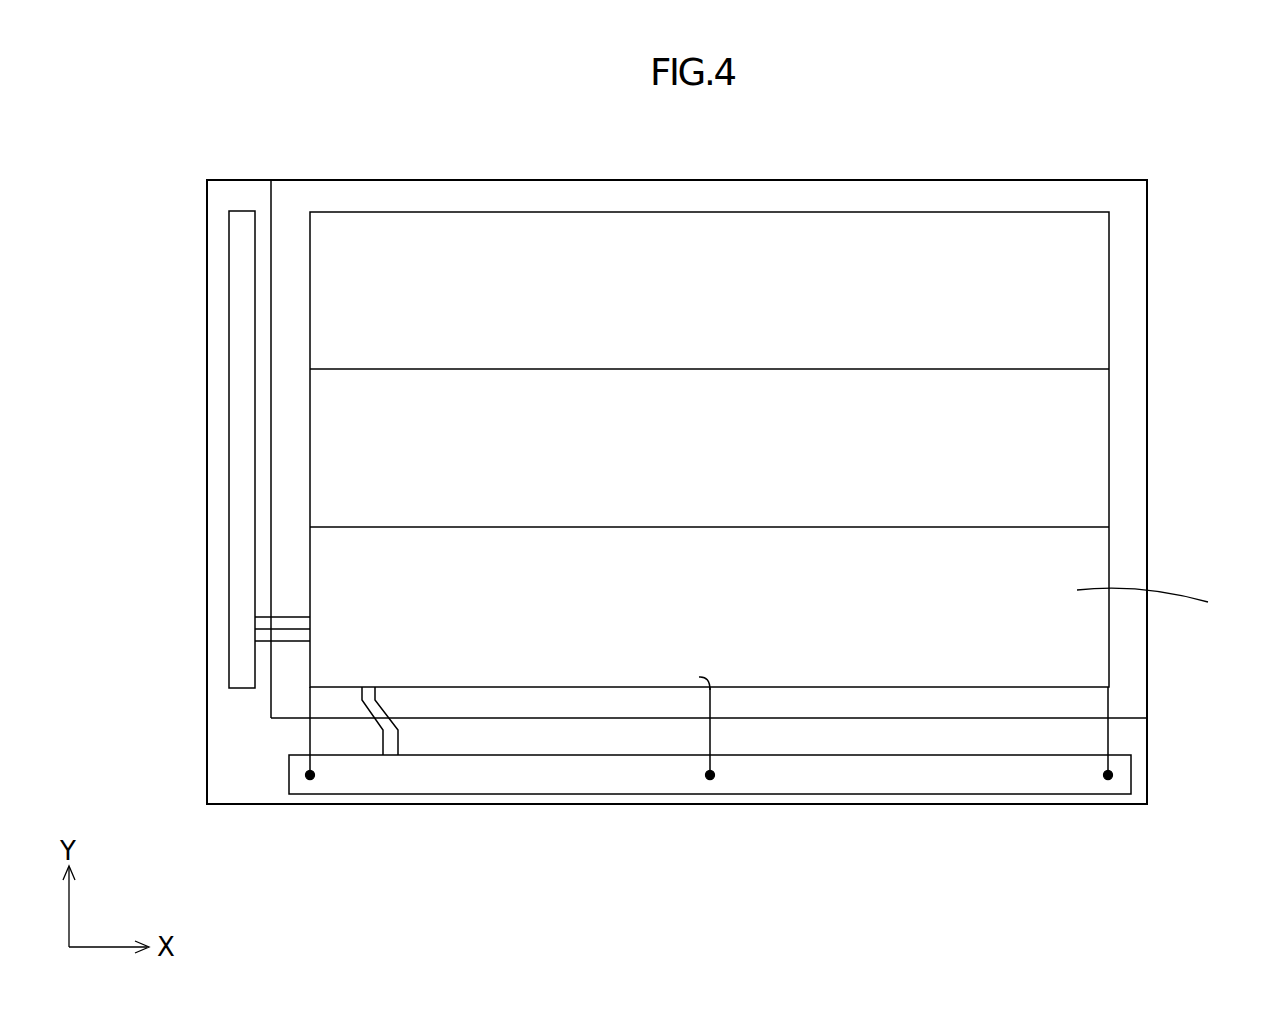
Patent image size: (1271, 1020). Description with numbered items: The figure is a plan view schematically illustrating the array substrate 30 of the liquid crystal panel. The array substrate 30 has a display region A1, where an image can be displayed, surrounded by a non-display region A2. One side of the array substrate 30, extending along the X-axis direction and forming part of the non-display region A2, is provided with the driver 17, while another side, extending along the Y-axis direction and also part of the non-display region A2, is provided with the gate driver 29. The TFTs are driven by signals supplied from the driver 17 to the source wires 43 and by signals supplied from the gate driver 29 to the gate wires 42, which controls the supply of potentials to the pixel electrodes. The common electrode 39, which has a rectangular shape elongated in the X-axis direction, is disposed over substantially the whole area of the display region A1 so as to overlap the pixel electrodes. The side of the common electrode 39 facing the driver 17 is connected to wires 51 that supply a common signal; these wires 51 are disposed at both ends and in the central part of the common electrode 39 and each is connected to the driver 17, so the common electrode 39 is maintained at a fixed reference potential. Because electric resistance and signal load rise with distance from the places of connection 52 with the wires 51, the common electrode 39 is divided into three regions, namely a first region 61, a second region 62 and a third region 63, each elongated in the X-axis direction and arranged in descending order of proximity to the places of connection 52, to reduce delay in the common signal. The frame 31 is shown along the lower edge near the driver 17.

The array substrate 30 is at (965, 148).
The common electrode 39 is at (602, 253).
The gate driver 29 is at (238, 308).
The display region A1 is at (272, 452).
The gate wires 42 is at (300, 616).
The places of connection 52 is at (310, 687).
The third region 63 is at (1077, 292).
The second region 62 is at (1077, 433).
The first region 61 is at (1164, 601).
The frame 31 is at (1125, 726).
The wires 51 is at (310, 730).
The source wires 43 is at (392, 735).
The driver 17 is at (602, 780).
The non-display region A2 is at (1133, 737).